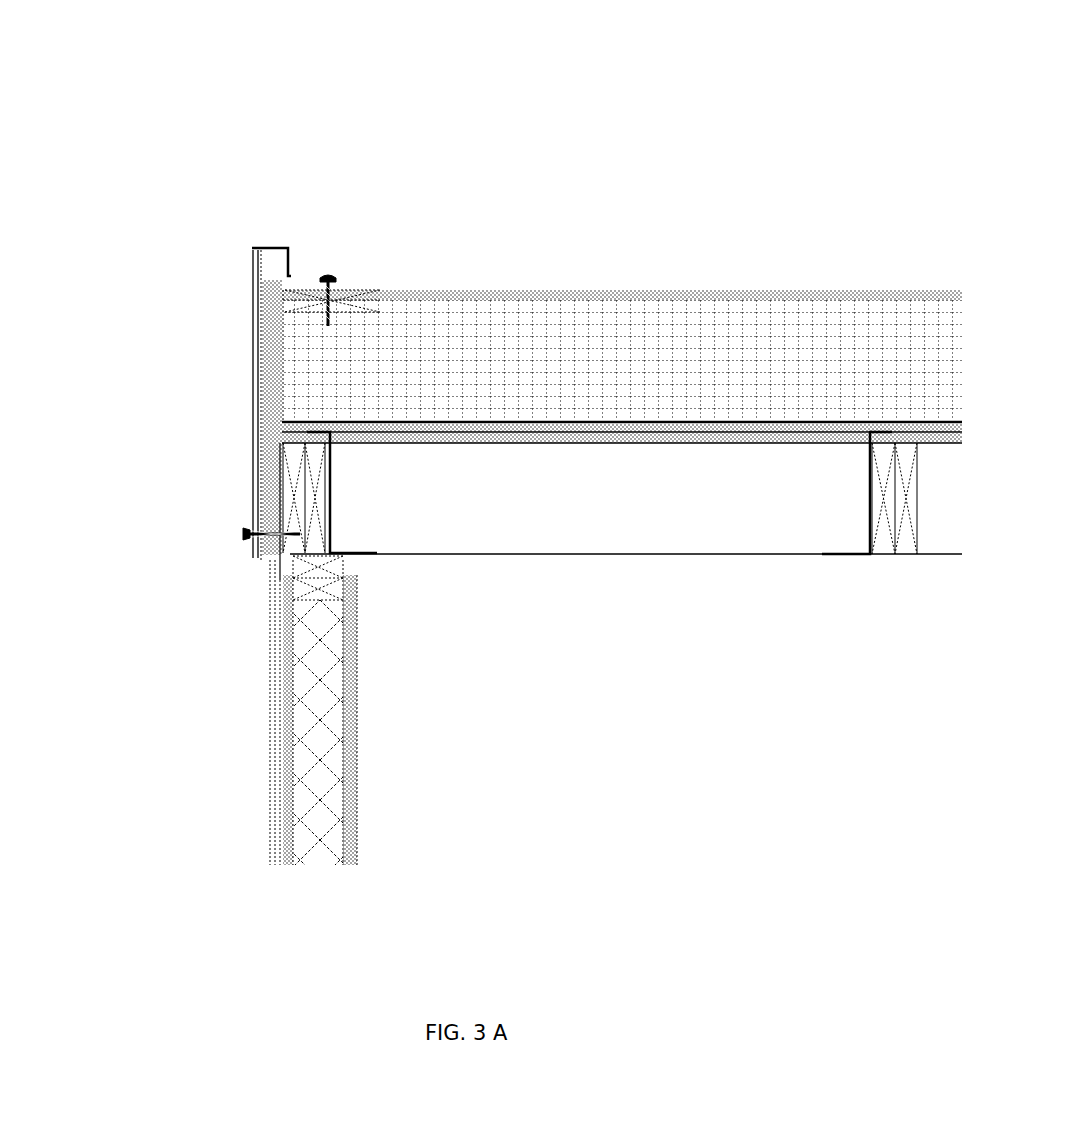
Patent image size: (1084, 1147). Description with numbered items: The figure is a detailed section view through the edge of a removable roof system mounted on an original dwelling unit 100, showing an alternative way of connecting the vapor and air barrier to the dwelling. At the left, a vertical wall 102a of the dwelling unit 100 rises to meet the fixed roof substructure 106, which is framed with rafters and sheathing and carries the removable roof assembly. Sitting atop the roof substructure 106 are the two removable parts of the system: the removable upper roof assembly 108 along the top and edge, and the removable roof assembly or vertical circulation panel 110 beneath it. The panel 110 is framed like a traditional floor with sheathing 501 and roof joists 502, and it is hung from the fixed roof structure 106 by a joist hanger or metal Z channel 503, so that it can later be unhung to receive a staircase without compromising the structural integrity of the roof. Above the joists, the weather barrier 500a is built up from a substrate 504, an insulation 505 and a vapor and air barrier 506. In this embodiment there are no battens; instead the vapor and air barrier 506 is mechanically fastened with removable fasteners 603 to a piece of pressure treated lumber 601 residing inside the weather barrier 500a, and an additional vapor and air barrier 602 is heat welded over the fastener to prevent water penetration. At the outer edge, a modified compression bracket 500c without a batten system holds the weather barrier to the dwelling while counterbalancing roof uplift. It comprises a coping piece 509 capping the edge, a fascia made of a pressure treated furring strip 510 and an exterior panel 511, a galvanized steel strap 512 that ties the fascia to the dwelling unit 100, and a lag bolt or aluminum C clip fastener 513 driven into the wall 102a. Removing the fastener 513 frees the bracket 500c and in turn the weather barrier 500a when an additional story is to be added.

The original dwelling unit 100 is at (260, 758).
The vertical wall 102a is at (258, 643).
The roof substructure 106 is at (626, 694).
The removable upper roof assembly 108 is at (295, 240).
The removable roof assembly/vertical circulation panel 110 is at (610, 882).
The weather barrier 500a is at (622, 491).
The modified compression bracket 500c is at (210, 322).
The sheathing 501 is at (775, 558).
The roof joists 502 is at (808, 445).
The joist hanger or metal Z channel 503 is at (868, 490).
The substrate 504 is at (548, 420).
The insulation 505 is at (548, 340).
The vapor and air barrier 506 is at (515, 290).
The coping piece 509 is at (250, 246).
The furring strip 510 is at (270, 330).
The exterior panel 511 is at (258, 330).
The steel strap 512 is at (278, 510).
The mechanical fastener 513 is at (240, 534).
The pressure treated lumber 601 is at (352, 305).
The additional vapor and air barrier 602 is at (362, 282).
The removable fasteners 603 is at (330, 282).